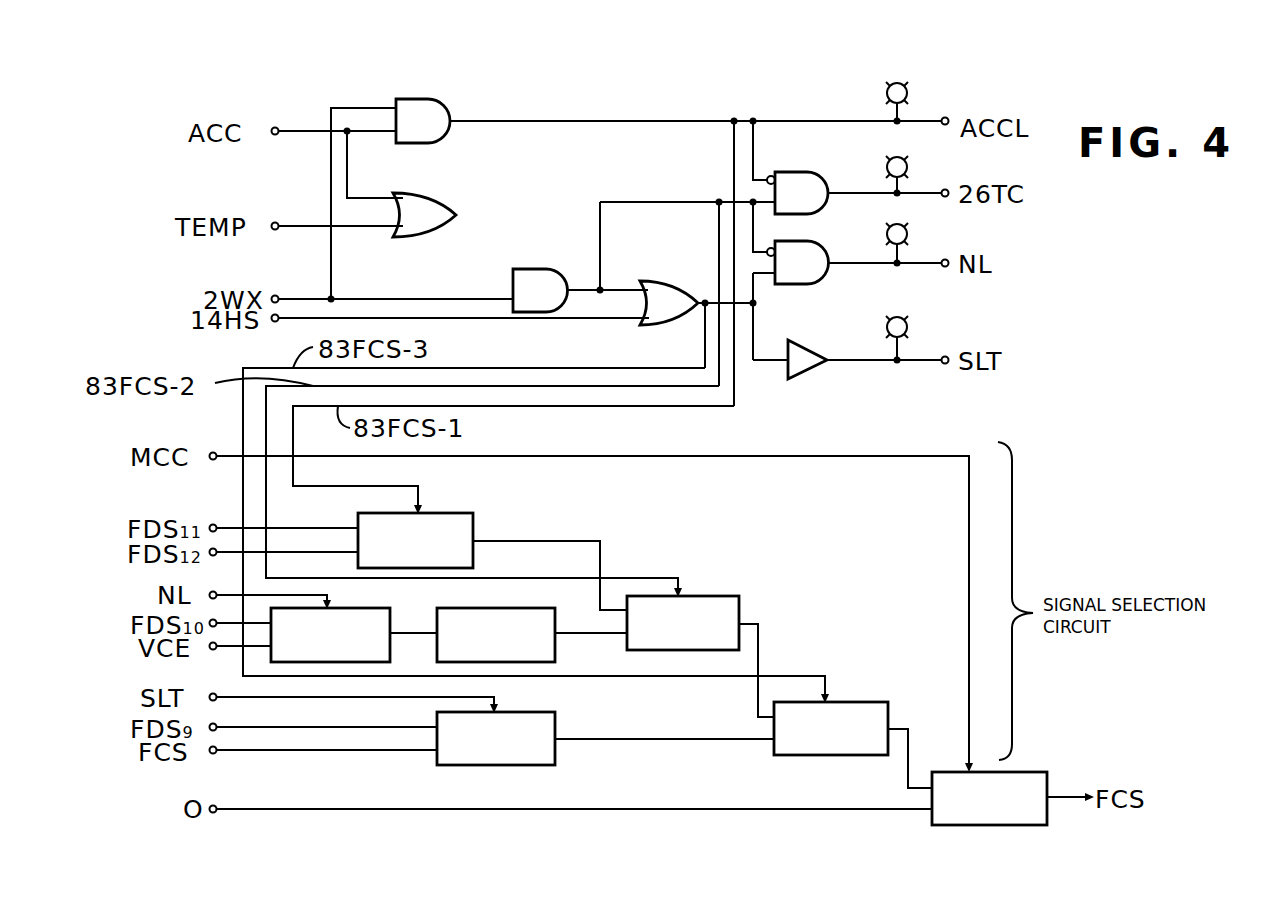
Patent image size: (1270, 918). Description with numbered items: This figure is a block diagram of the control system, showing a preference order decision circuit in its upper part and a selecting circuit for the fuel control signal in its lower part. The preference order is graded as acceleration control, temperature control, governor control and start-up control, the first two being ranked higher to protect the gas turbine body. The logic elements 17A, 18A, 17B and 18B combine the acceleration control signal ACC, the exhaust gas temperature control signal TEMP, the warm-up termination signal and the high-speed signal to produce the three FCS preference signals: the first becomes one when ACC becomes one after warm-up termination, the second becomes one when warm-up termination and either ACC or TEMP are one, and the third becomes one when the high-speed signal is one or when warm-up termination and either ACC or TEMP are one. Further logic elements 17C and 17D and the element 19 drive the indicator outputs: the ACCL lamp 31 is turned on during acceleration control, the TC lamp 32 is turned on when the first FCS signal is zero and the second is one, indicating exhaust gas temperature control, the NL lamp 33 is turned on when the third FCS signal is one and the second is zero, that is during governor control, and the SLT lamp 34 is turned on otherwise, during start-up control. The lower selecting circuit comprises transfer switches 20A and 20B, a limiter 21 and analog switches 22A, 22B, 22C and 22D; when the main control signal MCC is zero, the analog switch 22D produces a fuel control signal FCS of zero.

The AND gate 17A is at (444, 105).
The OR gate 18A is at (437, 196).
The AND gate 17B is at (534, 269).
The OR gate 18B is at (689, 276).
The AND gate 17C is at (793, 172).
The AND gate 17D is at (805, 241).
The buffer amplifier 19 is at (805, 345).
The ACCL lamp 31 is at (880, 96).
The 26 TC lamp 32 is at (907, 168).
The NL lamp 33 is at (908, 234).
The SLT lamp 34 is at (908, 327).
The analog switch 22A is at (472, 516).
The analog switch 22B is at (722, 596).
The analog switch 22C is at (853, 702).
The analog switch 22D is at (1027, 772).
The transfer switch 20A is at (357, 608).
The transfer switch 20B is at (547, 765).
The limiter 21 is at (556, 647).